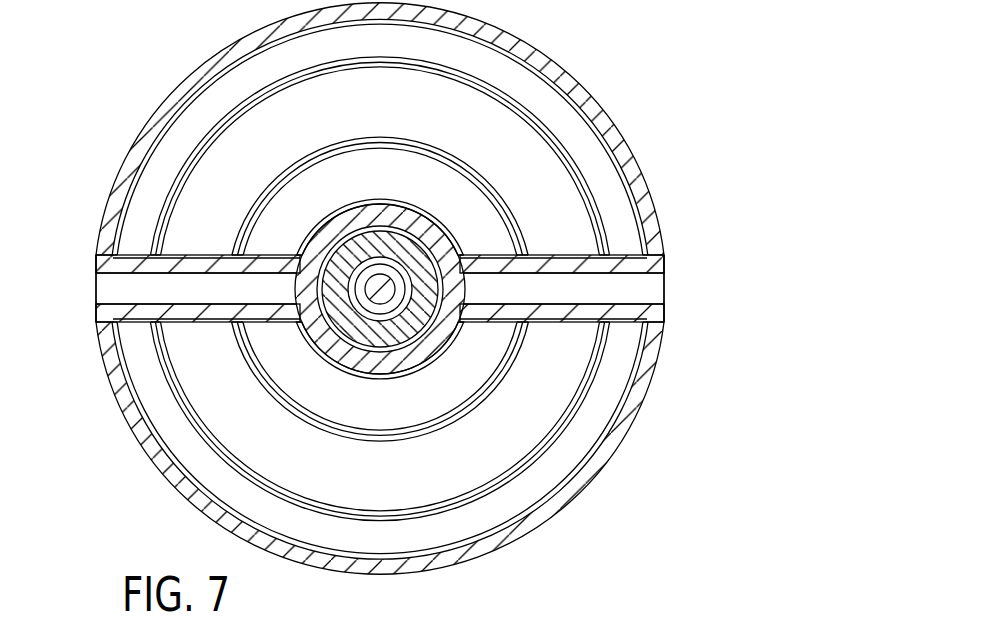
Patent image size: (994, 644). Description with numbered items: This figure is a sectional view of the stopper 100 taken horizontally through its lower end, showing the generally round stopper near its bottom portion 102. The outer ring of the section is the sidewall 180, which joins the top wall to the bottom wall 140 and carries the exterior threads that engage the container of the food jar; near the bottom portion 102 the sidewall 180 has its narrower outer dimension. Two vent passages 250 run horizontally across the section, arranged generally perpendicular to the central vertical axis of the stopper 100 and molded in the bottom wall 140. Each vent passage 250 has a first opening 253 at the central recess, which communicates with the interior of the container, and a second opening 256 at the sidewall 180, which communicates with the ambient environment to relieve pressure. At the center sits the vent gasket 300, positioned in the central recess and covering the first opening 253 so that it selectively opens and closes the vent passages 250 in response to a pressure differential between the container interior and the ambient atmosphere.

The stopper 100 is at (431, 288).
The bottom portion 102 is at (555, 505).
The bottom wall 140 is at (558, 392).
The sidewall 180 is at (630, 157).
The vent passages 250 is at (617, 296).
The first opening 253 is at (285, 292).
The second opening 256 is at (92, 290).
The vent gasket 300 is at (408, 253).